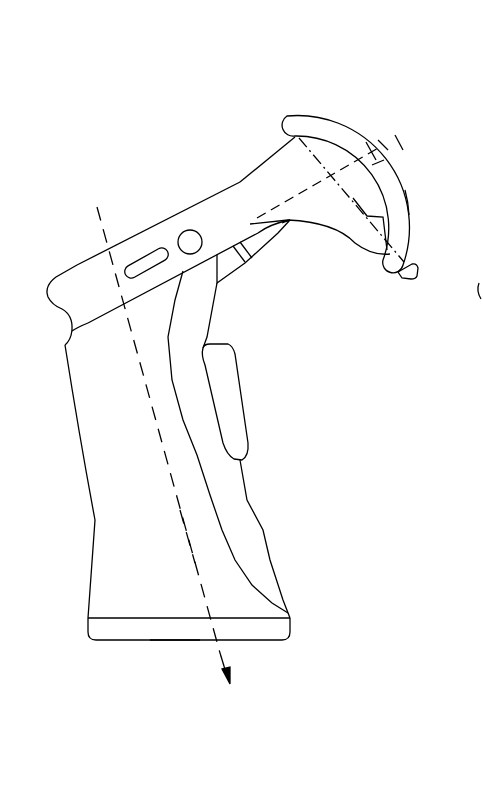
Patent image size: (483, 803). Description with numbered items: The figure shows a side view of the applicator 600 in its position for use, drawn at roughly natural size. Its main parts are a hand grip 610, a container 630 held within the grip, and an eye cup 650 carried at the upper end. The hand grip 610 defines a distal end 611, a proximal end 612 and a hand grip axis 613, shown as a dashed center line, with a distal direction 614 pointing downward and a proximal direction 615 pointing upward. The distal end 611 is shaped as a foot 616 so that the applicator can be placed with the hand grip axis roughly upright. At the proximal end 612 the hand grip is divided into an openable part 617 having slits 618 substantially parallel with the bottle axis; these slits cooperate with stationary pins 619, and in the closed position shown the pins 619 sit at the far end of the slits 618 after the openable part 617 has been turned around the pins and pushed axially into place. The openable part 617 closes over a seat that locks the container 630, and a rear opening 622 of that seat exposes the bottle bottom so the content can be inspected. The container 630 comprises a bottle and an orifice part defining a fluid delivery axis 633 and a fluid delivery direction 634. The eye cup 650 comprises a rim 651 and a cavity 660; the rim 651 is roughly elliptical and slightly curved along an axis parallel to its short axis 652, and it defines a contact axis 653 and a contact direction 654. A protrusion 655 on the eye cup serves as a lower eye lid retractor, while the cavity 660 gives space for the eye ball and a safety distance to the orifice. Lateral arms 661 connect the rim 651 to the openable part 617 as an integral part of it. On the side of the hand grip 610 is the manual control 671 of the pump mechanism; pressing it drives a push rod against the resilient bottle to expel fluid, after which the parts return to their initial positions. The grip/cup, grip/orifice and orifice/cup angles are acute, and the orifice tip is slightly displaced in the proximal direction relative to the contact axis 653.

The applicator 600 is at (136, 144).
The hand grip 610 is at (82, 503).
The distal end 611 is at (81, 649).
The proximal end 612 is at (55, 257).
The hand grip axis 613 is at (183, 557).
The distal direction 614 is at (234, 671).
The proximal direction 615 is at (90, 193).
The foot 616 is at (167, 640).
The openable part 617 is at (78, 293).
The slits 618 is at (133, 266).
The stationary pins 619 is at (189, 240).
The rear opening 622 is at (458, 318).
The container 630 is at (252, 270).
The fluid delivery axis 633 is at (378, 150).
The fluid delivery direction 634 is at (396, 133).
The eye cup 650 is at (311, 100).
The rim 651 is at (398, 203).
The short axis 652 is at (401, 232).
The contact axis 653 is at (392, 161).
The contact direction 654 is at (421, 147).
The protrusion 655 is at (413, 276).
The cavity 660 is at (342, 217).
The lateral arms 661 is at (268, 177).
The manual control 671 is at (232, 398).